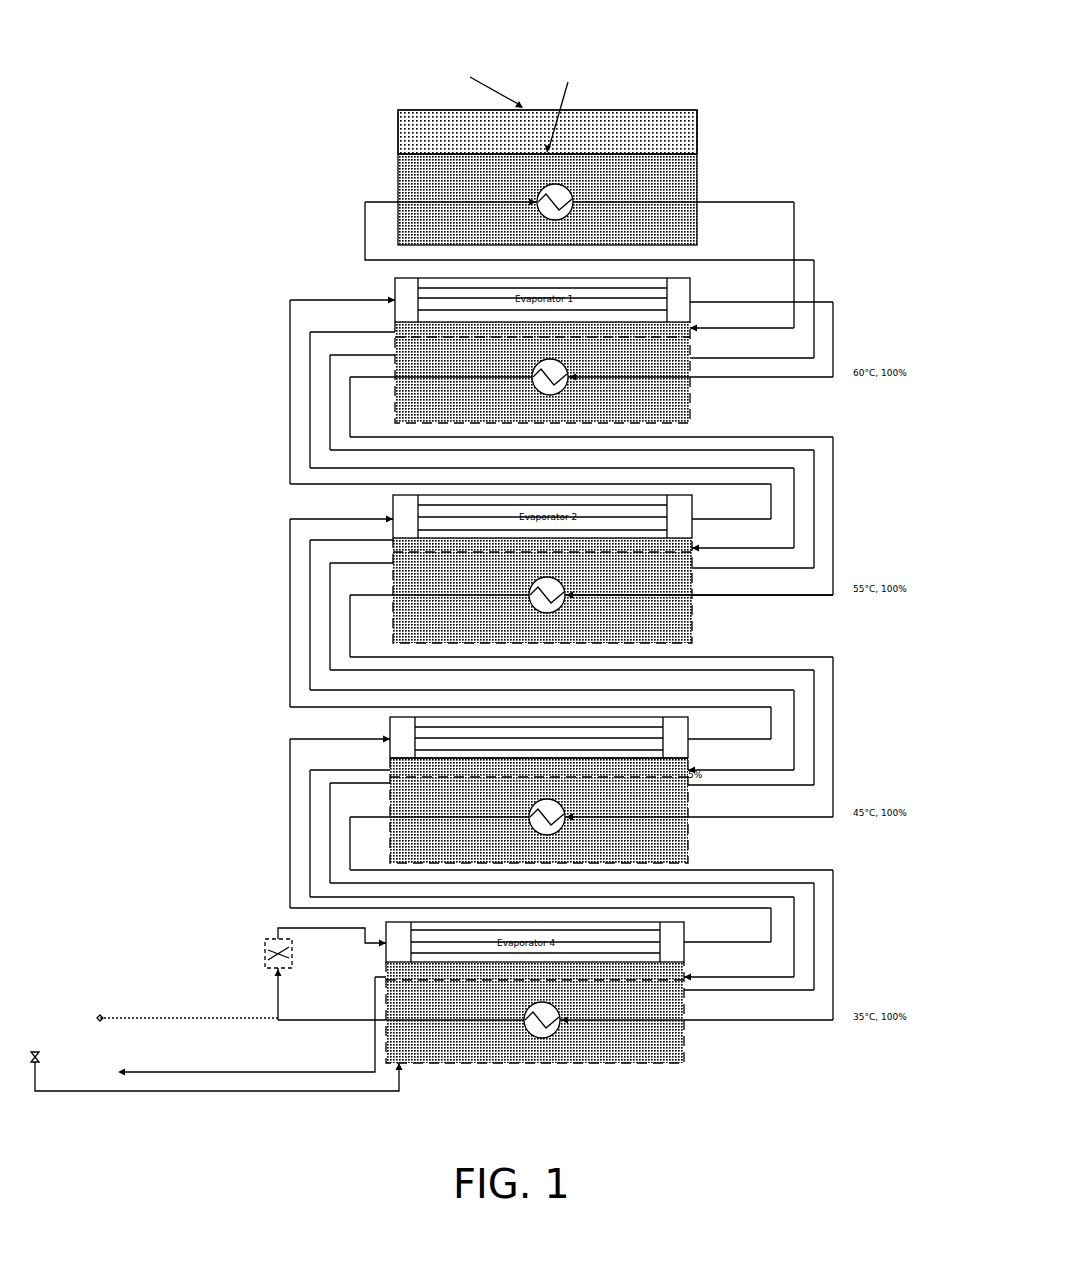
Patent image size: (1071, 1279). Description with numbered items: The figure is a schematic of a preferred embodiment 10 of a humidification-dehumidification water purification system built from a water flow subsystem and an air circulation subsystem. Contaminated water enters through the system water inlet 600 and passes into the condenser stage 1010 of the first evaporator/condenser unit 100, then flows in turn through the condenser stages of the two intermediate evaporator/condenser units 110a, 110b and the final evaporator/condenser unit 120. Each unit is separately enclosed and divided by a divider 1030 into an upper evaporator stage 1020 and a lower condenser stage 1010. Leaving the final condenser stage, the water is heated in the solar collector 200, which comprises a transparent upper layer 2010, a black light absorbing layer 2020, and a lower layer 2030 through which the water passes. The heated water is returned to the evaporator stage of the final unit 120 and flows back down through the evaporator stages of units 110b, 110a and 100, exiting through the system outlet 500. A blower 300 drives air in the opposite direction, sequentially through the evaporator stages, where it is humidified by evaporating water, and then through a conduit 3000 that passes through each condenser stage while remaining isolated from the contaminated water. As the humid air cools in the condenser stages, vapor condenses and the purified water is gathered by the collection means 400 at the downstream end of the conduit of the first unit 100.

The HDH water purification system 10 is at (212, 108).
The first evaporator/condenser unit 100 is at (605, 1050).
The intermediate evaporator/condenser unit 110a is at (418, 820).
The intermediate evaporator/condenser unit 110b is at (420, 600).
The final evaporator/condenser unit 120 is at (418, 385).
The solar collector 200 is at (418, 187).
The transparent upper layer 2010 is at (673, 132).
The layer of light absorbing material 2020 is at (680, 149).
The lower layer 2030 is at (652, 203).
The blower 300 is at (282, 947).
The collection means 400 is at (205, 1021).
The system outlet 500 is at (218, 1073).
The system water inlet 600 is at (323, 1097).
The condenser stage 1010 is at (647, 805).
The evaporator stage 1020 is at (650, 737).
The divider 1030 is at (418, 772).
The conduit 3000 is at (647, 596).